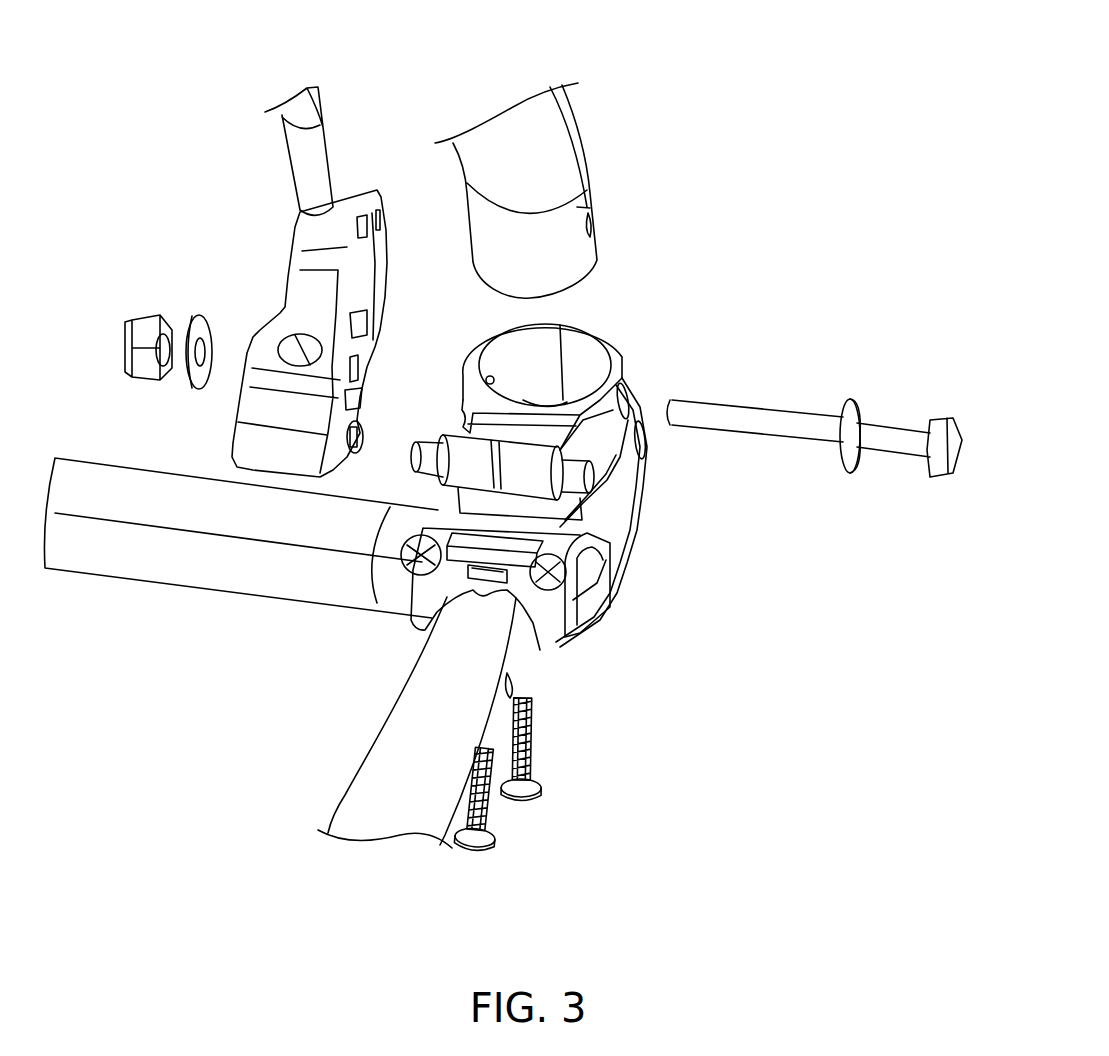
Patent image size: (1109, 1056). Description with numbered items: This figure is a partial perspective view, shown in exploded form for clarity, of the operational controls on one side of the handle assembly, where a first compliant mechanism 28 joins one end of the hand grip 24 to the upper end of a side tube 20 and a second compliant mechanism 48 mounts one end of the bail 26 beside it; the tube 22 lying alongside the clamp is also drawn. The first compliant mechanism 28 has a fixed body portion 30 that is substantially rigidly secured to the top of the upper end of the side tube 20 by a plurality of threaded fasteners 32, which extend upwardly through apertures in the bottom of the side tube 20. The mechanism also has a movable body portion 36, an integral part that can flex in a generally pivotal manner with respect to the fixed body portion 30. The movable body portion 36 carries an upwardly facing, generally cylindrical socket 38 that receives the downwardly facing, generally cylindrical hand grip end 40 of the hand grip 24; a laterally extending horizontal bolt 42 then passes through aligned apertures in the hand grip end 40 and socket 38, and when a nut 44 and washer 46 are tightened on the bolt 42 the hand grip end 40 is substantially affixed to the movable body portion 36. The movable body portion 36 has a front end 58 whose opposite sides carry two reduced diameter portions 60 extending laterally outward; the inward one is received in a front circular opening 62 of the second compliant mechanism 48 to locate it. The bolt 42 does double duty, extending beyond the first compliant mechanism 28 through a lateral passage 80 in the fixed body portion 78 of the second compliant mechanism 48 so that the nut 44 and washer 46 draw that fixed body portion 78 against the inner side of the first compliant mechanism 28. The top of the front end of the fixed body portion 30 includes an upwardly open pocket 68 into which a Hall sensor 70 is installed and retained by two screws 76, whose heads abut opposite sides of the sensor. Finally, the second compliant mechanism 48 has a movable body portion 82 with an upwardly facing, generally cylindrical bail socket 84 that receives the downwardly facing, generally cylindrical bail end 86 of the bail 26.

The side tube 20 is at (350, 772).
The tube 22 is at (203, 572).
The hand grip 24 is at (580, 122).
The bail 26 is at (345, 61).
The first compliant mechanism 28 is at (553, 453).
The fixed body portion 30 is at (628, 545).
The threaded fasteners 32 is at (535, 737).
The movable body portion 36 is at (583, 450).
The socket 38 is at (587, 353).
The hand grip end 40 is at (590, 208).
The bolt 42 is at (873, 430).
The nut 44 is at (150, 323).
The washer 46 is at (200, 320).
The second compliant mechanism 48 is at (316, 248).
The front end 58 is at (473, 457).
The reduced diameter portions 60 is at (433, 442).
The front circular opening 62 is at (350, 450).
The pocket 68 is at (487, 610).
The Hall sensor 70 is at (473, 550).
The screws 76 is at (403, 560).
The fixed body portion 78 is at (368, 325).
The lateral passage 80 is at (360, 370).
The movable body portion 82 is at (297, 307).
The bail socket 84 is at (295, 348).
The bail end 86 is at (320, 163).